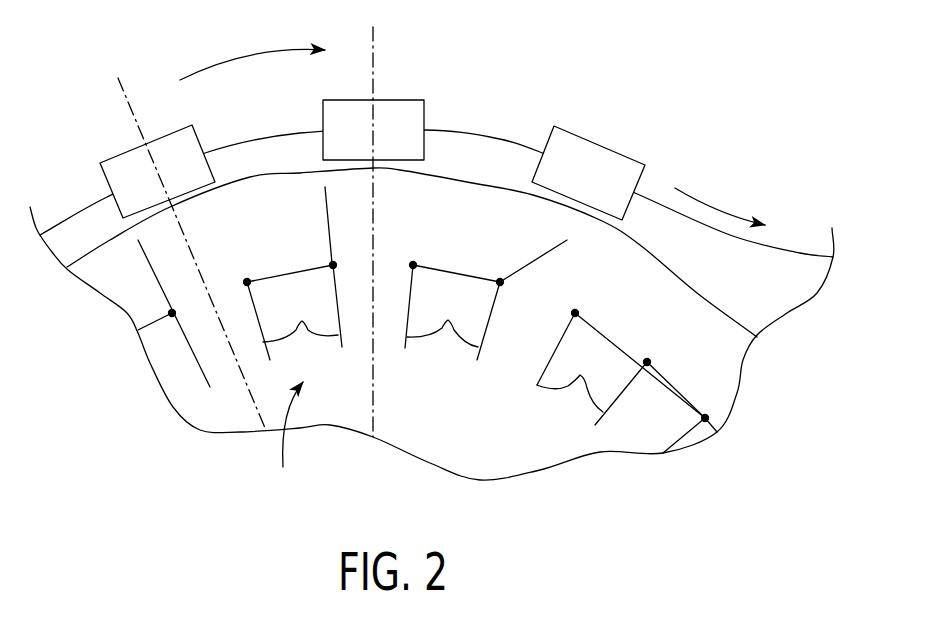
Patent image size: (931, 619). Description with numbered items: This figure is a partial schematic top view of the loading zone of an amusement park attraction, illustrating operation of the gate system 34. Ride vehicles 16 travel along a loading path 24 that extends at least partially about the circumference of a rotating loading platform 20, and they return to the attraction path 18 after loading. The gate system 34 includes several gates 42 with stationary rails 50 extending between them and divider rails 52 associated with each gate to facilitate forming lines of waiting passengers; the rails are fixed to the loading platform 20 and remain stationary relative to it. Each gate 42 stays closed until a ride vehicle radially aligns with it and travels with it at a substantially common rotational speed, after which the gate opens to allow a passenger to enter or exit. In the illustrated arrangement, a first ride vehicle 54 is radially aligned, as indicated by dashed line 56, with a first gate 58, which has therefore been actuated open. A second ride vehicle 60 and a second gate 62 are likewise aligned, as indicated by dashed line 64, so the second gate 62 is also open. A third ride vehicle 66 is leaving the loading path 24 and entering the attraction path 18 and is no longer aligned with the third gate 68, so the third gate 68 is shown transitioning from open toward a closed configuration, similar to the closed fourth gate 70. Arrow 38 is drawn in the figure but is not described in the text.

The ride vehicle 16 is at (364, 137).
The attraction path 18 is at (805, 255).
The loading platform 20 is at (695, 303).
The loading path 24 is at (485, 137).
The gate system 34 is at (286, 442).
The flow direction arrow 38 is at (255, 62).
The gate 42 is at (146, 262).
The stationary rail 50 is at (287, 273).
The divider rail 52 is at (433, 349).
The first ride vehicle 54 is at (123, 153).
The dashed line 56 is at (245, 387).
The first gate 58 is at (160, 287).
The second ride vehicle 60 is at (395, 100).
The second gate 62 is at (330, 203).
The dashed line 64 is at (373, 393).
The third ride vehicle 66 is at (603, 140).
The third gate 68 is at (550, 253).
The fourth gate 70 is at (690, 397).